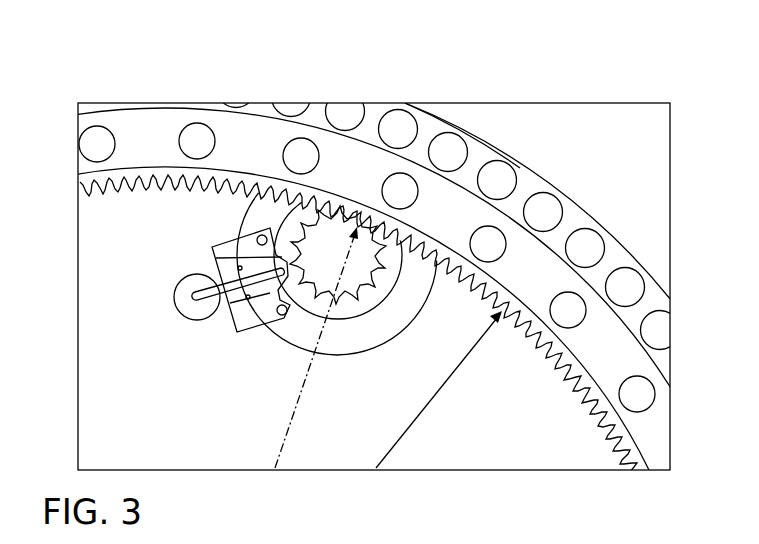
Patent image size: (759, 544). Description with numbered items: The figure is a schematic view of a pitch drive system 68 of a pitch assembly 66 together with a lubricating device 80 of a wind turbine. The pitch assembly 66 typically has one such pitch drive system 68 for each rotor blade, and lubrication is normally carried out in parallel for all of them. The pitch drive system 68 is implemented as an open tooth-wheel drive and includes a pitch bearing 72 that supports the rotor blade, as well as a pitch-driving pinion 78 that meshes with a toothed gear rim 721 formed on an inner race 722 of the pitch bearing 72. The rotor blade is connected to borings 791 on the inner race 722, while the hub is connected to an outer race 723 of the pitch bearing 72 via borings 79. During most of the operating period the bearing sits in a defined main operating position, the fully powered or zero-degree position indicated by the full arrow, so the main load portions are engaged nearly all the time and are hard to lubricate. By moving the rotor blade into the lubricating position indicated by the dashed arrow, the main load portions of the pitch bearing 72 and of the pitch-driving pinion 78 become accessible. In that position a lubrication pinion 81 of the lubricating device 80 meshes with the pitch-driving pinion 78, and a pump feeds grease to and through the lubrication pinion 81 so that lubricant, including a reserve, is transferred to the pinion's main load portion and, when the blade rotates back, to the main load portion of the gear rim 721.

The pitch assembly 66 is at (636, 58).
The pitch drive system 68 is at (120, 56).
The pitch bearing 72 is at (230, 132).
The toothed gear rim 721 is at (163, 180).
The inner race 722 is at (78, 116).
The outer race 723 is at (376, 120).
The pitch-driving pinion 78 is at (372, 290).
The borings 79 is at (289, 106).
The borings 791 is at (95, 150).
The lubricating device 80 is at (200, 338).
The lubrication pinion 81 is at (300, 287).